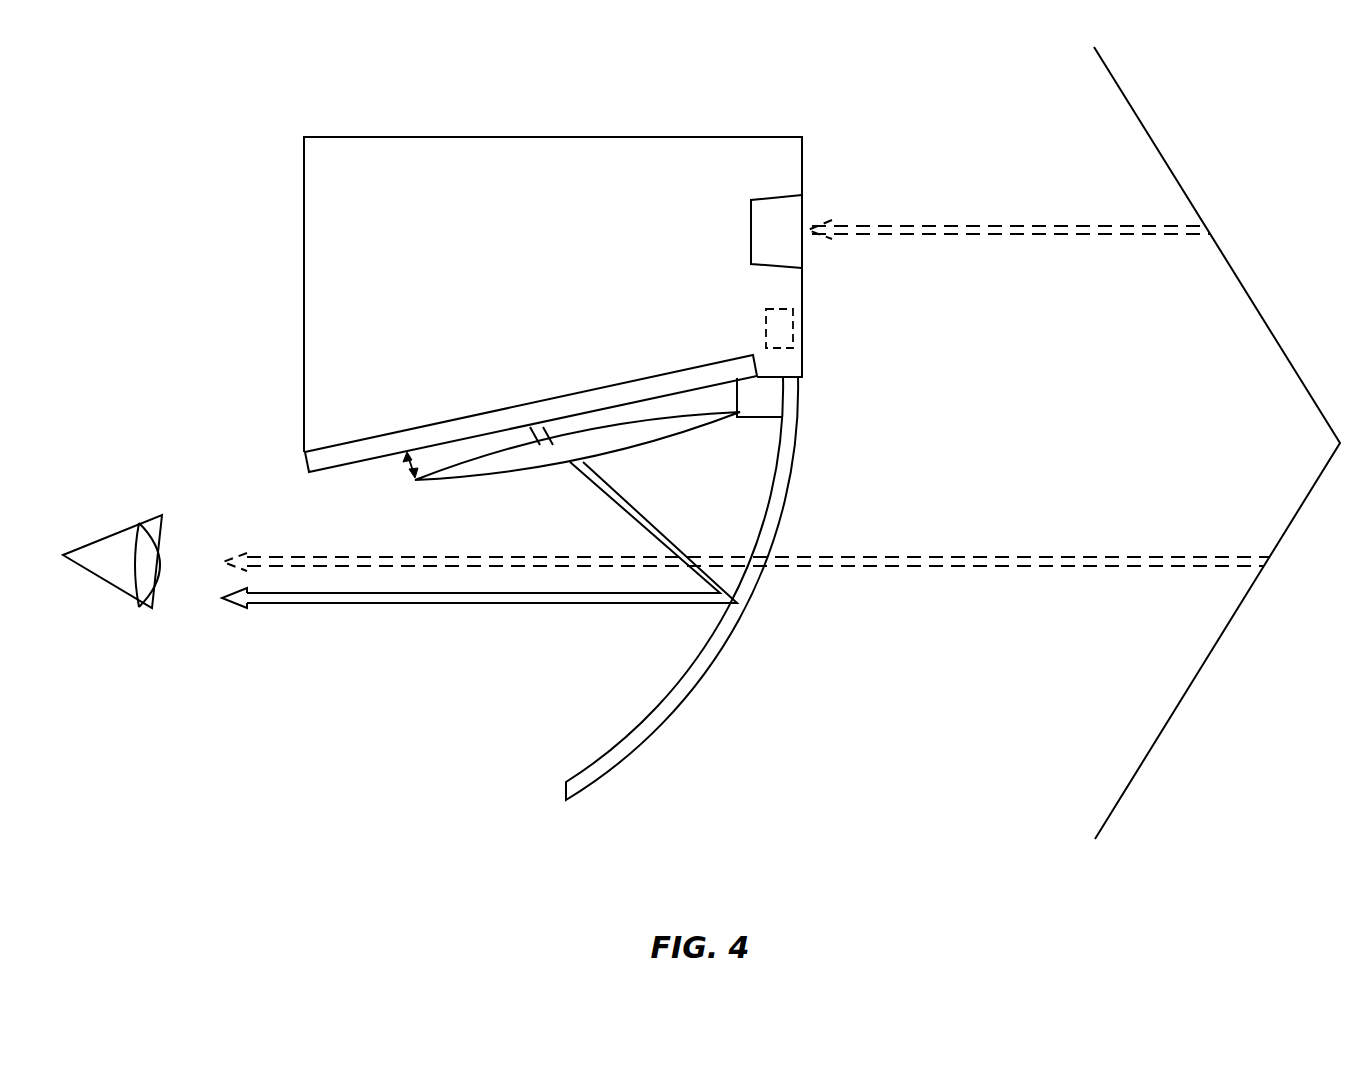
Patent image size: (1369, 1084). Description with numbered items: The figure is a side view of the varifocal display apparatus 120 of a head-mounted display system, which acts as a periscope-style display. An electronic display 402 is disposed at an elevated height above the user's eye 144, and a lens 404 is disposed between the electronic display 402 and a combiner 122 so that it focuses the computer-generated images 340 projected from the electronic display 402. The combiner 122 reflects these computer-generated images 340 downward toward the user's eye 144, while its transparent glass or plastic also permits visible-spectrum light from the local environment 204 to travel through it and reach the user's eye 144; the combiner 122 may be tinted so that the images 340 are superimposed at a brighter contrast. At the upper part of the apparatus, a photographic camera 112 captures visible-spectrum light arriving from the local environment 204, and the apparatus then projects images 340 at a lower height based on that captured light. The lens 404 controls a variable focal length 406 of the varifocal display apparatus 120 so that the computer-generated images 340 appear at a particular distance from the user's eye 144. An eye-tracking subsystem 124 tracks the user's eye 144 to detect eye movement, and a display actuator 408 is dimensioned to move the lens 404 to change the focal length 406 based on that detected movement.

The varifocal display apparatus 120 is at (467, 137).
The photographic camera 112 is at (802, 209).
The eye-tracking subsystem 124 is at (793, 330).
The display actuator 408 is at (783, 405).
The electronic display 402 is at (477, 415).
The lens 404 is at (625, 425).
The variable focal length 406 is at (408, 467).
The combiner 122 is at (643, 743).
The computer-generated images 340 is at (335, 603).
The user's eye 144 is at (132, 523).
The local environment 204 is at (1167, 718).